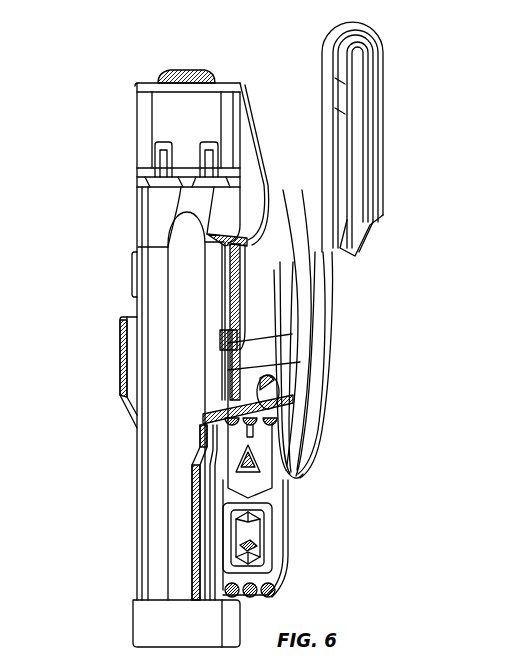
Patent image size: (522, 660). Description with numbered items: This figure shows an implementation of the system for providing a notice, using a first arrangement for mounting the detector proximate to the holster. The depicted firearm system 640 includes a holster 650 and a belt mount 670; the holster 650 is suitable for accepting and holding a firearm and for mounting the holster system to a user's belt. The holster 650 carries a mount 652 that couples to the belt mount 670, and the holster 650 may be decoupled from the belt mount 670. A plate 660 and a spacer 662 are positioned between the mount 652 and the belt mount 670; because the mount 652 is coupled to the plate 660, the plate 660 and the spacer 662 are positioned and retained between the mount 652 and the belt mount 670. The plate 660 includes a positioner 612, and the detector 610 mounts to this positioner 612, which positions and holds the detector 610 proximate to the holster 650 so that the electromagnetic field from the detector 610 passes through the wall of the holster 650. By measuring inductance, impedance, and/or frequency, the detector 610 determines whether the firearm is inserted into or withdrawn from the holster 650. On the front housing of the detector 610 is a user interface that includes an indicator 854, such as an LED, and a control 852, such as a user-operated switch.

The firearm system 640 is at (118, 90).
The holster 650 is at (137, 522).
The plate 660 is at (283, 188).
The spacer 662 is at (302, 188).
The belt mount 670 is at (358, 252).
The mount 652 is at (240, 297).
The positioner 612 is at (320, 383).
The indicator 854 is at (253, 431).
The control 852 is at (272, 530).
The detector 610 is at (285, 575).